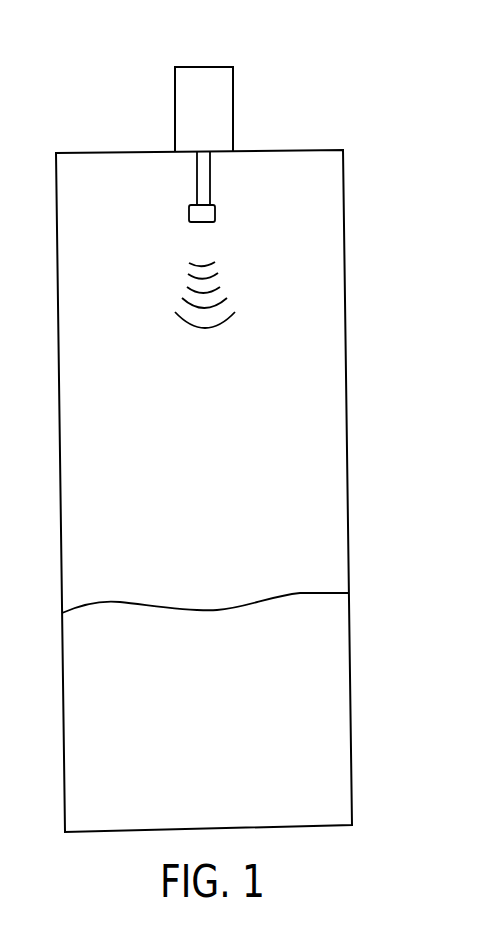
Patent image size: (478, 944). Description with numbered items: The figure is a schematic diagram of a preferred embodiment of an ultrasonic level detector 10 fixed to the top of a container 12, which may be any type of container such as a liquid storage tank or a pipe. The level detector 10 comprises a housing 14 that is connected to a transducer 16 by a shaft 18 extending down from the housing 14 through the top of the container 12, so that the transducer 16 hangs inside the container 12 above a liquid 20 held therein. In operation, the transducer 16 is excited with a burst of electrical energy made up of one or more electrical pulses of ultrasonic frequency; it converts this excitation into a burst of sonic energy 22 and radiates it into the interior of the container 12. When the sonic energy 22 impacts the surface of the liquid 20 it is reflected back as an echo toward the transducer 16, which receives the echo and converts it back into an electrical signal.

The ultrasonic level detector 10 is at (148, 94).
The container 12 is at (345, 300).
The housing 14 is at (223, 100).
The transducer 16 is at (215, 212).
The shaft 18 is at (210, 190).
The liquid 20 is at (228, 711).
The sonic energy 22 is at (234, 295).